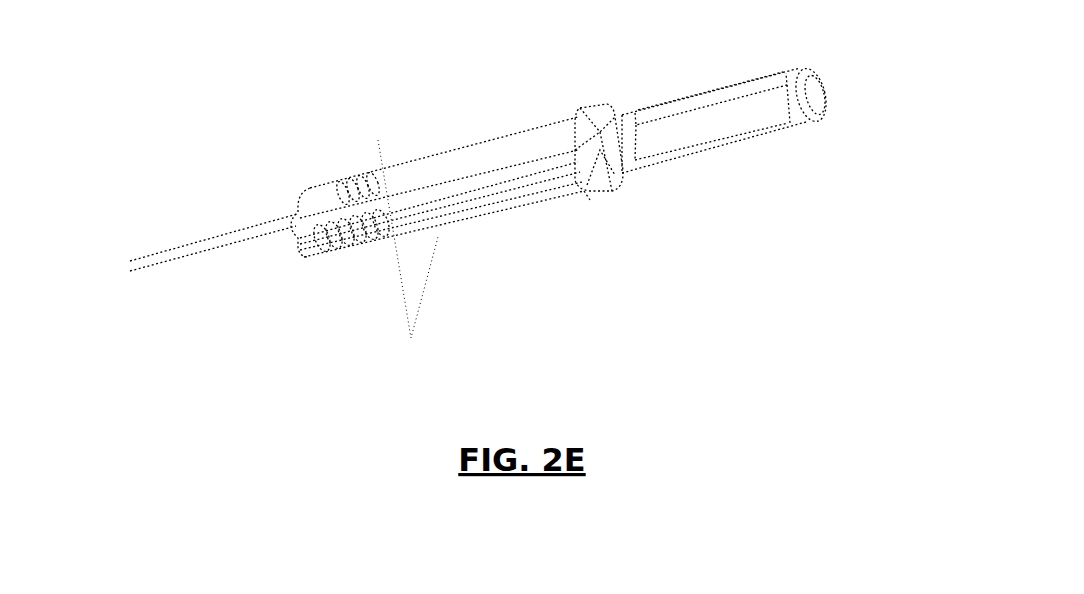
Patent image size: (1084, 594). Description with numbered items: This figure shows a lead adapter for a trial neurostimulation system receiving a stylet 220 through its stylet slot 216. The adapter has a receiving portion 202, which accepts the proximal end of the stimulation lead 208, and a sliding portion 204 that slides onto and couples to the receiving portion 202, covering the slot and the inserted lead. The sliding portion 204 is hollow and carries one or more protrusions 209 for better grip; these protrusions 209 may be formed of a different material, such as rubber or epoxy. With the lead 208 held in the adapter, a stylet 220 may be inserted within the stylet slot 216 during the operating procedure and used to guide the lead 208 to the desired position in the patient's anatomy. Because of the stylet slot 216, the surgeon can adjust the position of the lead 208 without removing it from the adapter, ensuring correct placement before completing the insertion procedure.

The receiving portion 202 is at (613, 192).
The sliding portion 204 is at (447, 212).
The stimulation lead 208 is at (243, 238).
The protrusions 209 is at (357, 237).
The stylet slot 216 is at (603, 157).
The stylet 220 is at (795, 110).